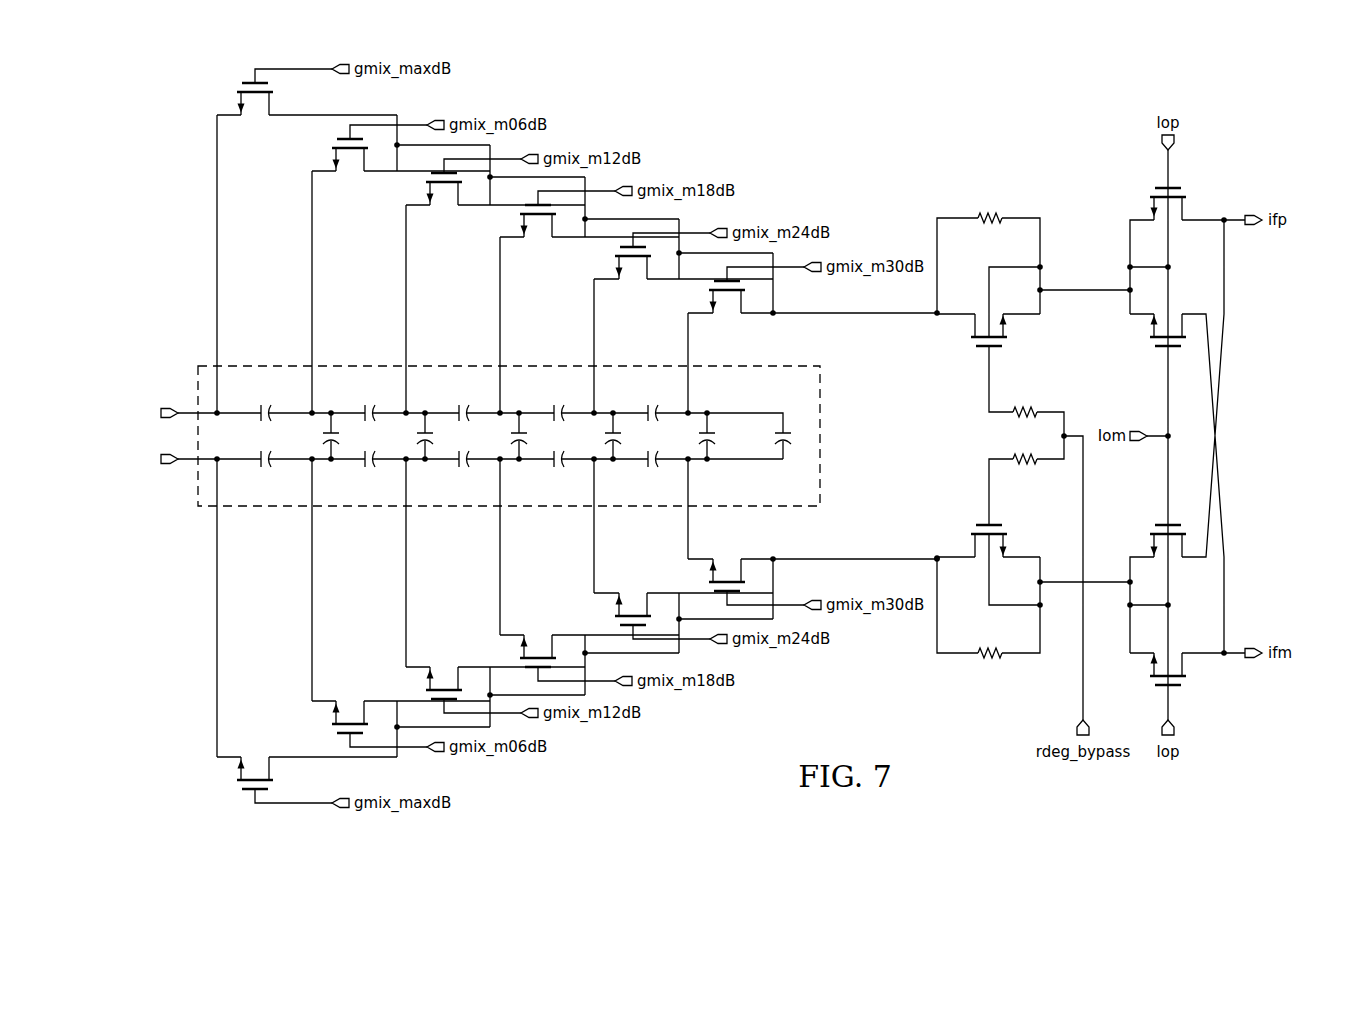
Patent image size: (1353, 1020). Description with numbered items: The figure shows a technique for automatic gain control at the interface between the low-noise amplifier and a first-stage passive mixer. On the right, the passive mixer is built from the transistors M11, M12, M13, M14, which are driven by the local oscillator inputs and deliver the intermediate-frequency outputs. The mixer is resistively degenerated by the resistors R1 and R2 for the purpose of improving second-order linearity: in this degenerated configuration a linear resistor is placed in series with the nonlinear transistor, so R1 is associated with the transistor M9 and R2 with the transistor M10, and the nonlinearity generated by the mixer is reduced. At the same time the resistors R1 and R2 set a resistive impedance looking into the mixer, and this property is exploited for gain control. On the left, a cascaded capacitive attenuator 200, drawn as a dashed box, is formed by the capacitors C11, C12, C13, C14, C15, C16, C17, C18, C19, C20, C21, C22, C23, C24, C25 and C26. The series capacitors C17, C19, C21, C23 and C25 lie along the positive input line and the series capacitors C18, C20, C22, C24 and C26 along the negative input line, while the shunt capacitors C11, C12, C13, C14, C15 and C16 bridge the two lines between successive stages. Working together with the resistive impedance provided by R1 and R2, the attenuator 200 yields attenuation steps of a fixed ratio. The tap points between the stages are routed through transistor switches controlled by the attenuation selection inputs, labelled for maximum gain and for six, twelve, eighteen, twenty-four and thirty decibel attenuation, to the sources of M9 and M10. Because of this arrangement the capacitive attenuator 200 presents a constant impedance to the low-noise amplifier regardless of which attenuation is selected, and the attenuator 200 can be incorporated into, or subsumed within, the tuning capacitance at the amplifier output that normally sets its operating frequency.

The cascaded capacitive attenuator 200 is at (450, 407).
The capacitor C11 is at (314, 437).
The capacitor C12 is at (408, 437).
The capacitor C13 is at (502, 437).
The capacitor C14 is at (596, 437).
The capacitor C15 is at (690, 437).
The capacitor C16 is at (766, 437).
The capacitor C17 is at (265, 403).
The capacitor C18 is at (265, 471).
The capacitor C19 is at (369, 403).
The capacitor C20 is at (369, 471).
The capacitor C21 is at (463, 403).
The capacitor C22 is at (463, 471).
The capacitor C23 is at (558, 403).
The capacitor C24 is at (558, 471).
The capacitor C25 is at (652, 403).
The capacitor C26 is at (652, 471).
The transistor M9 is at (975, 330).
The transistor M10 is at (970, 541).
The mixer transistor M11 is at (1148, 204).
The mixer transistor M12 is at (1148, 330).
The mixer transistor M13 is at (1148, 541).
The mixer transistor M14 is at (1148, 669).
The degeneration resistor R1 is at (988, 253).
The degeneration resistor R2 is at (988, 607).